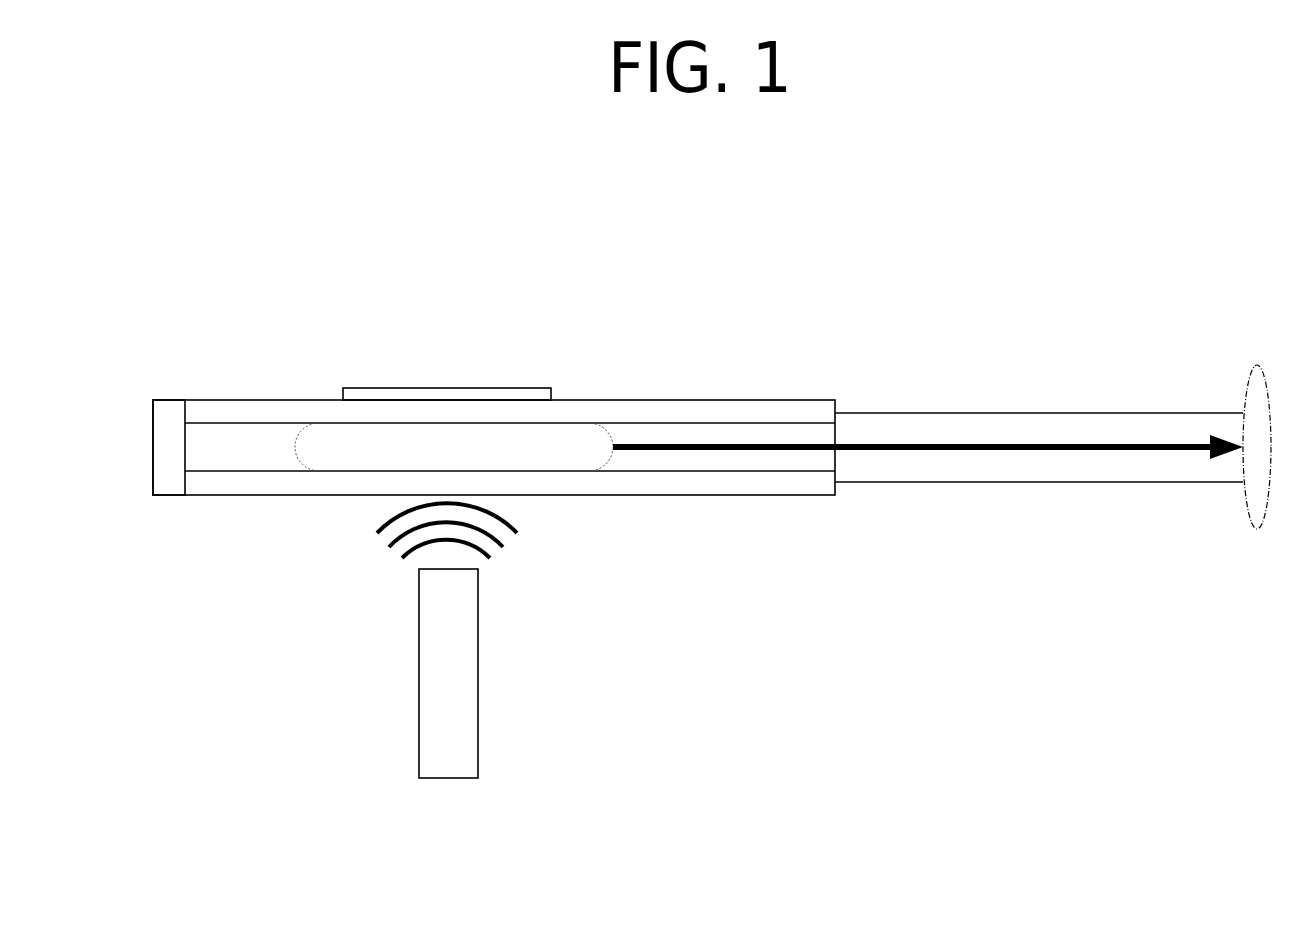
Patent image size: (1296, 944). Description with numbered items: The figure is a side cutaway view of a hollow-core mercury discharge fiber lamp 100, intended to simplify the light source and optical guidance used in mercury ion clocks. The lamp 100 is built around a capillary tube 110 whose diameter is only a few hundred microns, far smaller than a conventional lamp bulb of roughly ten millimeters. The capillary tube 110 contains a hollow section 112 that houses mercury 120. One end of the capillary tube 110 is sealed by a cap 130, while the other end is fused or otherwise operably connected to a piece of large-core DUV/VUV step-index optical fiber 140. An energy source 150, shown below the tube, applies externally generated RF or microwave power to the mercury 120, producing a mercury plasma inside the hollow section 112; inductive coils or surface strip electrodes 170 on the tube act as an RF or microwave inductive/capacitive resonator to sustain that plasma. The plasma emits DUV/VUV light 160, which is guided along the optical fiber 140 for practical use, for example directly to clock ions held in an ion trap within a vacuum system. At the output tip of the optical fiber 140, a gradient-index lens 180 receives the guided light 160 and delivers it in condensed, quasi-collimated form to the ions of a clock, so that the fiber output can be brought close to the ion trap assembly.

The hollow-core mercury discharge fiber lamp 100 is at (250, 211).
The capillary tube 110 is at (257, 399).
The hollow section 112 is at (240, 453).
The mercury 120 is at (170, 495).
The cap 130 is at (563, 472).
The optical fiber 140 is at (975, 482).
The energy source 150 is at (478, 672).
The DUV/VUV light 160 is at (962, 445).
The inductive coils or surface strip electrodes 170 is at (443, 386).
The gradient-index lens 180 is at (1252, 370).